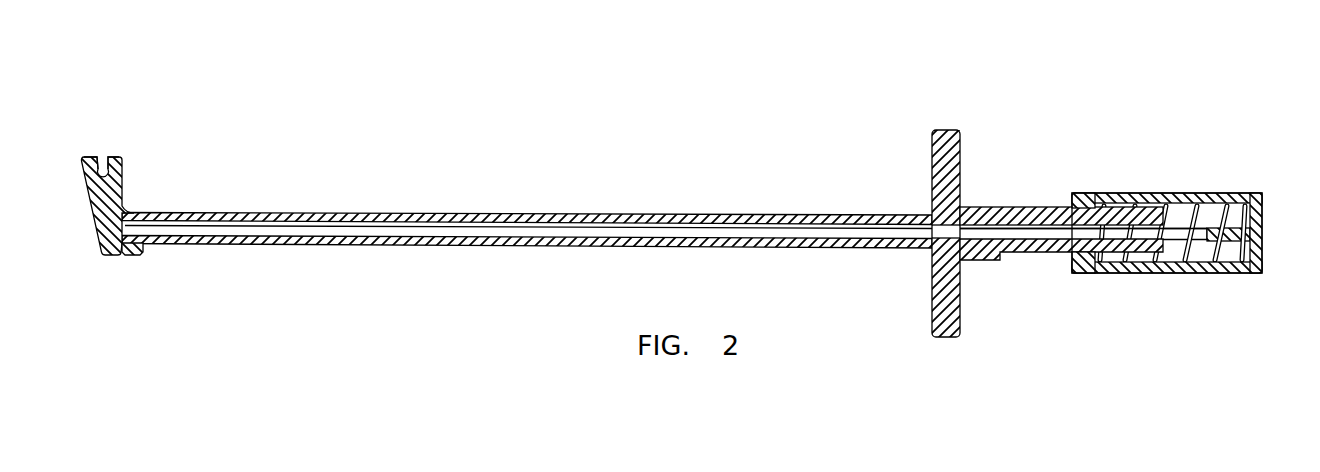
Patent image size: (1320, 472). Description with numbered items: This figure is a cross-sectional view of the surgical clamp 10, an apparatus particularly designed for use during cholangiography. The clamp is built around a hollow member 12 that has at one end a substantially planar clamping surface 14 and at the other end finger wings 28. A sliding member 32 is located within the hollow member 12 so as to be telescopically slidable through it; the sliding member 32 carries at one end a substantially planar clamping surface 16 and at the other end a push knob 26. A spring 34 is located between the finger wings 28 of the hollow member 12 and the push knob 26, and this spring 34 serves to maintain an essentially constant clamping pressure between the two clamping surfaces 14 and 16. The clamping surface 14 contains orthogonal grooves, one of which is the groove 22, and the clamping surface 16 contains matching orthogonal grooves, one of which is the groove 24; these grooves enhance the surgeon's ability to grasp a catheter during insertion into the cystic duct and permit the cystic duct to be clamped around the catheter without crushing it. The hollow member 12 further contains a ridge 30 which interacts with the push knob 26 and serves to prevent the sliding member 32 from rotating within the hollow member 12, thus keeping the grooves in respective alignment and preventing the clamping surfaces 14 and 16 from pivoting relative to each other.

The surgical clamp 10 is at (646, 205).
The hollow member 12 is at (442, 213).
The clamping surface 14 is at (137, 253).
The clamping surface 16 is at (108, 232).
The orthogonal groove 22 is at (113, 180).
The orthogonal groove 24 is at (81, 173).
The push knob 26 is at (1146, 193).
The finger wings 28 is at (947, 131).
The ridge 30 is at (1011, 207).
The sliding member 32 is at (355, 227).
The spring 34 is at (1212, 194).